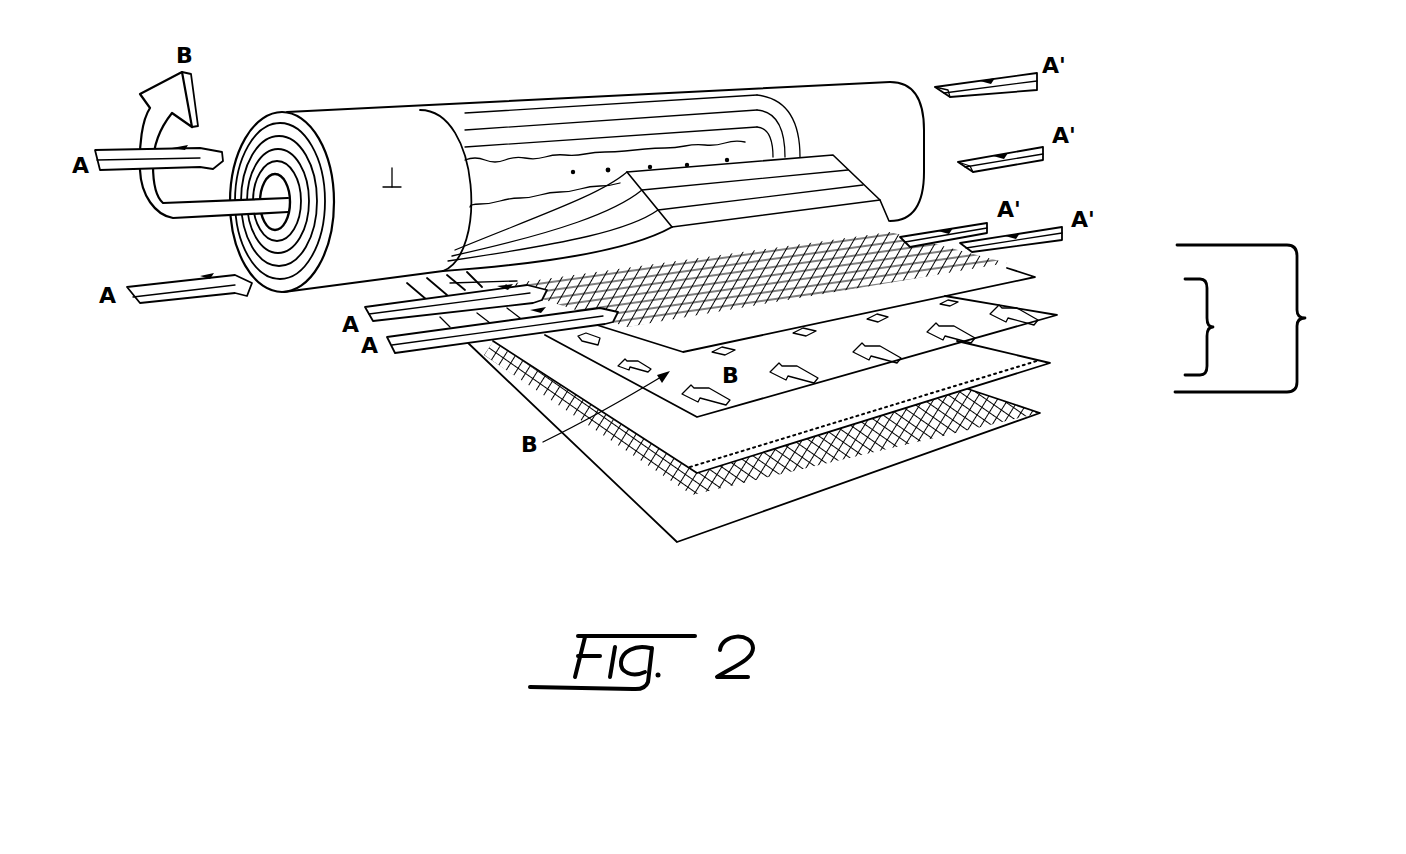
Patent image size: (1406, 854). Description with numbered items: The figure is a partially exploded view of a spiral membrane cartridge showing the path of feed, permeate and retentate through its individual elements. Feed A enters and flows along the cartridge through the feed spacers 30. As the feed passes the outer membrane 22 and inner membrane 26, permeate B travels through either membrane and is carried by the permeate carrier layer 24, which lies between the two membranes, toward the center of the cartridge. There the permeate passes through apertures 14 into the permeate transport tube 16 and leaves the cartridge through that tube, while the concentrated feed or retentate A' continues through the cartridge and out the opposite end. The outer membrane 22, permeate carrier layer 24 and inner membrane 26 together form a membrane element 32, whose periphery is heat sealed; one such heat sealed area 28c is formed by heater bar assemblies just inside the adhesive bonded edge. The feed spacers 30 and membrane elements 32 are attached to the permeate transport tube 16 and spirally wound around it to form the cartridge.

The apertures 14 is at (608, 168).
The permeate transport tube 16 is at (533, 175).
The outer membrane 22 is at (1070, 363).
The permeate carrier layer 24 is at (1064, 315).
The inner membrane 26 is at (1048, 278).
The heat sealed area 28c is at (907, 440).
The feed spacers 30 is at (1030, 262).
The membrane element 32 is at (621, 497).